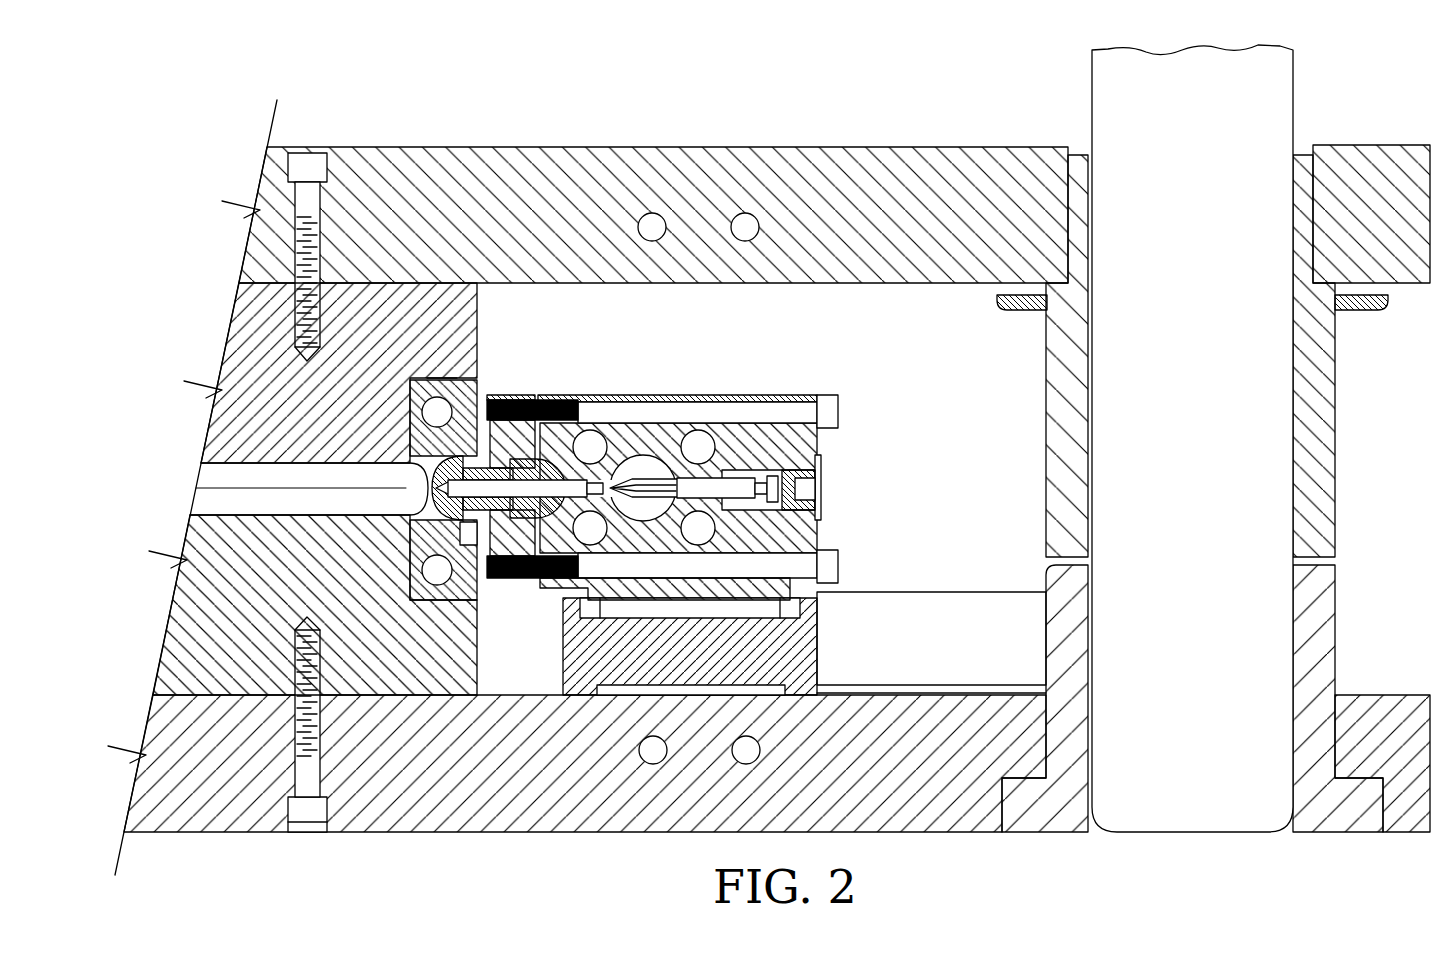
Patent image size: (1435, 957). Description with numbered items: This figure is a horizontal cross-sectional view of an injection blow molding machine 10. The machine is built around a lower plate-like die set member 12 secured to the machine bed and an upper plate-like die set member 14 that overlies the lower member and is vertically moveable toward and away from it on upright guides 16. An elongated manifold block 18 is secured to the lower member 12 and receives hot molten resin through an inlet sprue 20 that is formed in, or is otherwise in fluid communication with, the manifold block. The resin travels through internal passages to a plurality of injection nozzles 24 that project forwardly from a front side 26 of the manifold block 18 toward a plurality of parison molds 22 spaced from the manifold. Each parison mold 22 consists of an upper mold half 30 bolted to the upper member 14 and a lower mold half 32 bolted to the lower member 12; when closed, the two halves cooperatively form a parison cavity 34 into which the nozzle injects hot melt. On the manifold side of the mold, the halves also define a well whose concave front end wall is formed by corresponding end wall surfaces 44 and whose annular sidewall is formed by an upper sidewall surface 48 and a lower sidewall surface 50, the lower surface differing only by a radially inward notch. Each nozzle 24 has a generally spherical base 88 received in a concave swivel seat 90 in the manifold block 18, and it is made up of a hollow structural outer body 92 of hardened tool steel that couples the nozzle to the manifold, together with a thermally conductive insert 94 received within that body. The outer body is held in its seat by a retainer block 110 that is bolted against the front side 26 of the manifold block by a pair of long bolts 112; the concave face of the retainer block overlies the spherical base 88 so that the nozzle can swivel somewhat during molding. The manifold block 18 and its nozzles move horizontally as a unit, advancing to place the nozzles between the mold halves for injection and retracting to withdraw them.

The injection blow molding machine 10 is at (943, 80).
The lower plate-like die set member 12 is at (557, 800).
The upper plate-like die set member 14 is at (557, 175).
The upright guides 16 is at (1270, 92).
The manifold block 18 is at (753, 447).
The inlet sprue 20 is at (805, 490).
The parison molds 22 is at (450, 356).
The injection nozzles 24 is at (521, 418).
The front side 26 is at (542, 577).
The upper mold half 30 is at (455, 455).
The lower mold half 32 is at (458, 585).
The parison cavity 34 is at (405, 488).
The end wall surfaces 44 is at (418, 520).
The upper sidewall surface 48 is at (470, 468).
The lower sidewall surface 50 is at (418, 536).
The spherical base 88 is at (549, 487).
The concave swivel seat 90 is at (558, 583).
The structural outer body 92 is at (492, 425).
The thermally conductive insert 94 is at (562, 478).
The retainer block 110 is at (505, 578).
The long bolts 112 is at (672, 412).